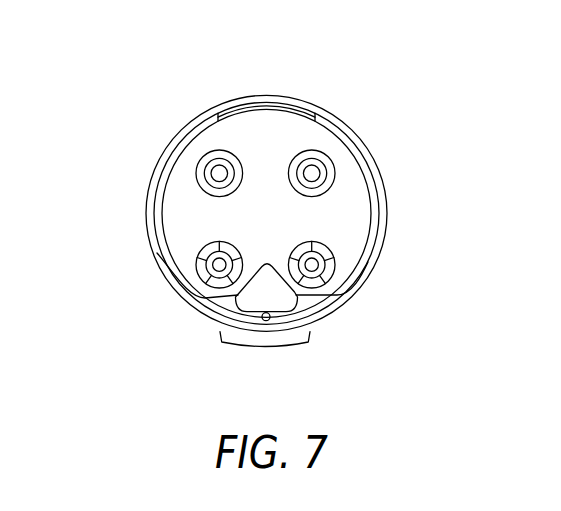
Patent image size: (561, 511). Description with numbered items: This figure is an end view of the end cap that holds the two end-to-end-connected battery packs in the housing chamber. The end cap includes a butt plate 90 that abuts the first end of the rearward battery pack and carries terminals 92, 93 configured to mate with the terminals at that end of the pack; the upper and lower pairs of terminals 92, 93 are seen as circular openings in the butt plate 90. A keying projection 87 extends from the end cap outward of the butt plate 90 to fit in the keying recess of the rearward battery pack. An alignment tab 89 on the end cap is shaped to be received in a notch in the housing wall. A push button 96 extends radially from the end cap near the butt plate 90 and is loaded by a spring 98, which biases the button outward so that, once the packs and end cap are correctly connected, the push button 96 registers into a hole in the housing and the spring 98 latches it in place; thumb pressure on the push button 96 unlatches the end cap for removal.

The keying projection 87 is at (247, 293).
The alignment tab 89 is at (273, 98).
The butt plate 90 is at (307, 128).
The terminals 92 is at (203, 155).
The terminals 93 is at (197, 261).
The push button 96 is at (287, 346).
The spring 98 is at (384, 195).